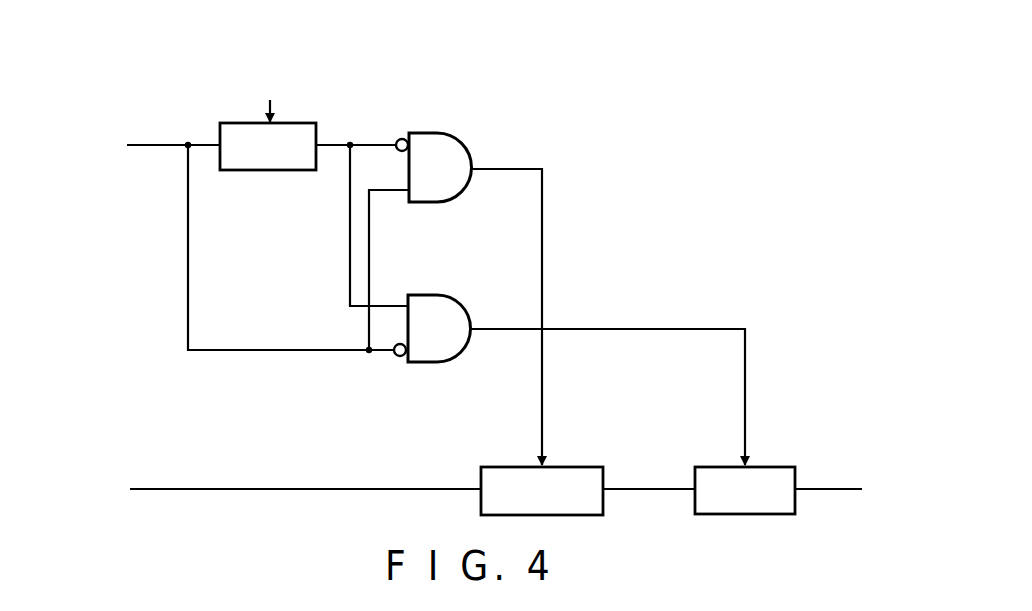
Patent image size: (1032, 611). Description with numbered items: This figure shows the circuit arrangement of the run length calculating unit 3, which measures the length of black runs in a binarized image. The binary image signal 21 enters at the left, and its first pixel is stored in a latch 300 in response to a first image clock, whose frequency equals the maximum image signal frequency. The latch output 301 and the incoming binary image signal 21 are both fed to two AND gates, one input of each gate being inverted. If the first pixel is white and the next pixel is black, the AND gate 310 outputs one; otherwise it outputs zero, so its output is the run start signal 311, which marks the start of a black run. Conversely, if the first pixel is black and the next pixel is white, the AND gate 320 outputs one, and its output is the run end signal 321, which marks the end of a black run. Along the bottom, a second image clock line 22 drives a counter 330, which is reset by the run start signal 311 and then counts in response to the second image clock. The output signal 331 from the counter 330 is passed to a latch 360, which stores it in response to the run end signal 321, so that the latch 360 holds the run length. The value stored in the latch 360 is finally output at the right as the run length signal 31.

The run length calculating unit 3 is at (703, 115).
The binary image signal 21 is at (152, 125).
The clock signal CLK2 line 22 is at (282, 488).
The latch 300 is at (287, 172).
The latch output signal line 301 is at (362, 140).
The AND gate 310 is at (425, 133).
The run start signal 311 is at (502, 168).
The AND gate 320 is at (430, 295).
The run end signal 321 is at (643, 327).
The counter 330 is at (575, 466).
The output signal 331 is at (642, 487).
The latch 360 is at (713, 466).
The run length signal 31 is at (825, 486).